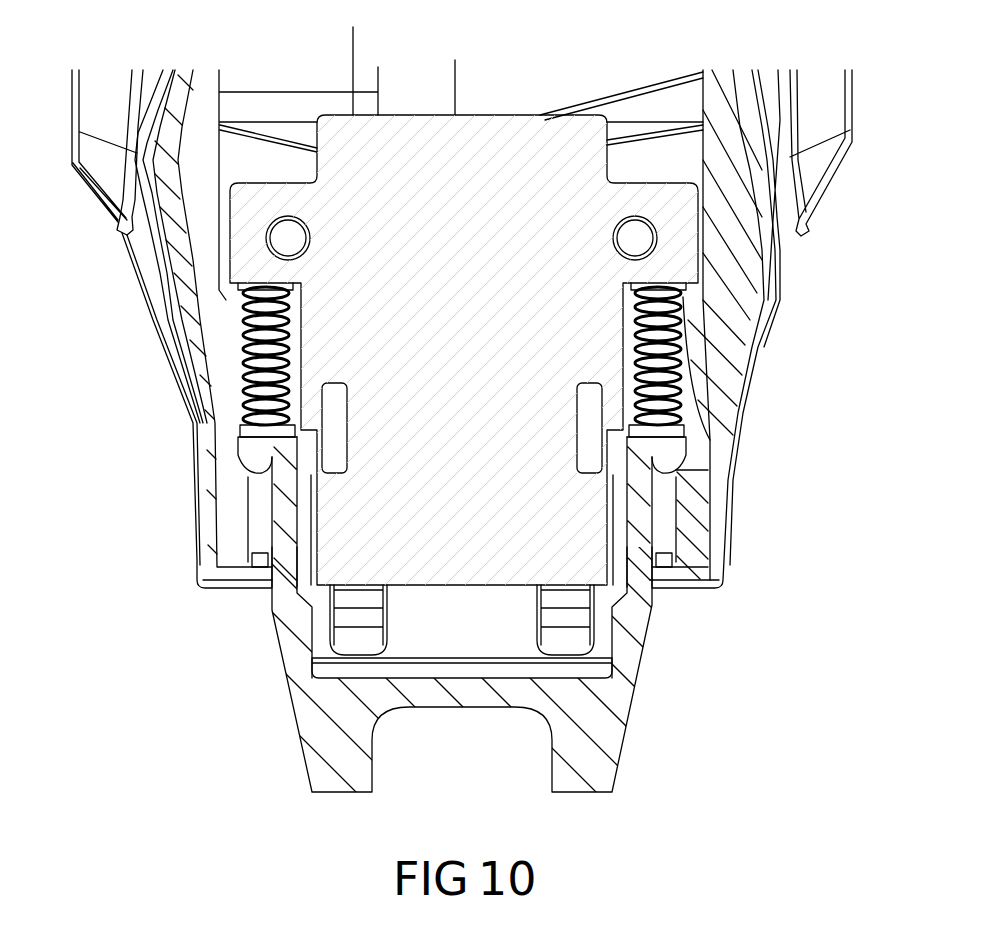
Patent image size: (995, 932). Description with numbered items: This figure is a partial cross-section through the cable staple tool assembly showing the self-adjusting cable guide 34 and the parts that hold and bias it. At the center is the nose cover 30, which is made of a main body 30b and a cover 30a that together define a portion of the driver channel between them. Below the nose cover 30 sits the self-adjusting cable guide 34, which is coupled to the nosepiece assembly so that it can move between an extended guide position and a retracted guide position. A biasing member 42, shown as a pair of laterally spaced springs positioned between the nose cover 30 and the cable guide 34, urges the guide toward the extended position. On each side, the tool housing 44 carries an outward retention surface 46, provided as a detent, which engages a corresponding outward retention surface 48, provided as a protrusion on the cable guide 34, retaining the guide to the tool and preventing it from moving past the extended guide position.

The nose cover 30 is at (462, 598).
The cover 30a is at (677, 250).
The main body 30b is at (677, 300).
The self-adjusting cable guide 34 is at (627, 645).
The biasing member 42 is at (683, 370).
The tool housing 44 is at (685, 503).
The outward retention surface 46 is at (675, 477).
The outward retention surface 48 is at (718, 462).